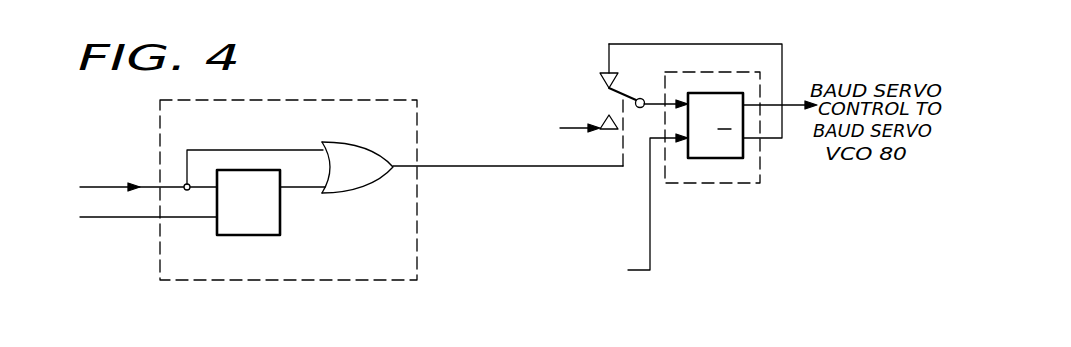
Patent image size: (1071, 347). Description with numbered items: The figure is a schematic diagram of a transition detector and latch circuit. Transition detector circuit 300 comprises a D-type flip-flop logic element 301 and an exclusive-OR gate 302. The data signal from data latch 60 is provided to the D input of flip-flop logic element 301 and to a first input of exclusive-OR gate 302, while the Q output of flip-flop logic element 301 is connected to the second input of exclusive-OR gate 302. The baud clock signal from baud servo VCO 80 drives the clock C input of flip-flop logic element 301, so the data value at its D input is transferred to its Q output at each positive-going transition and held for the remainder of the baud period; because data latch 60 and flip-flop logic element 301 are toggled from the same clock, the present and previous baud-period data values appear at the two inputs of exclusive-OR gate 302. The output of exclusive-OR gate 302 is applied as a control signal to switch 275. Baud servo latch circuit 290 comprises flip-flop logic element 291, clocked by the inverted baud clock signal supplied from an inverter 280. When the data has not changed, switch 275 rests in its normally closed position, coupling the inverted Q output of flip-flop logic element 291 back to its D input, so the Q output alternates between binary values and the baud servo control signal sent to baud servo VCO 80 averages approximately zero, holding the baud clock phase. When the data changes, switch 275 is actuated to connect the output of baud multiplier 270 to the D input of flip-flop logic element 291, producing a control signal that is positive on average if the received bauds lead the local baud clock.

The transition detector circuit 300 is at (364, 100).
The D-type flip-flop logic element 301 is at (281, 221).
The exclusive-OR gate 302 is at (378, 140).
The switch 275 is at (624, 90).
The baud servo latch circuit 290 is at (731, 70).
The flip-flop logic element 291 is at (728, 91).
The data latch 60 is at (125, 155).
The baud servo VCO 80 is at (122, 264).
The baud multiplier 270 is at (537, 130).
The inverter 280 is at (493, 288).